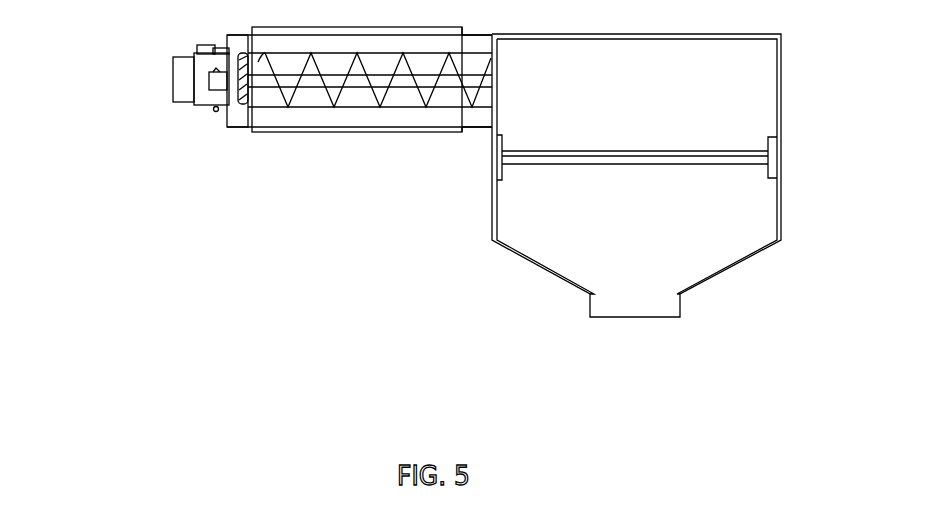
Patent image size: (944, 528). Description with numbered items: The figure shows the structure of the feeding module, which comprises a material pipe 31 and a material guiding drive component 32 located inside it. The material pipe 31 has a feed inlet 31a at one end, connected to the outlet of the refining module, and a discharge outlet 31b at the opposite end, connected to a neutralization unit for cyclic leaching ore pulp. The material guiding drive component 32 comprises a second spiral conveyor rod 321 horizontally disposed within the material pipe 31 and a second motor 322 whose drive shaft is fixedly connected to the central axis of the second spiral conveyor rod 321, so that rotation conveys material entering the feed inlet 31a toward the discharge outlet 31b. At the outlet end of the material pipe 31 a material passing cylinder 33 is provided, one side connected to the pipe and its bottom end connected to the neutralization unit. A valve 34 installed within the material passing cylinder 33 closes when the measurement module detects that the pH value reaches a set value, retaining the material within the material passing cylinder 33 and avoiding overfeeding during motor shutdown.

The material pipe 31 is at (397, 132).
The feed inlet 31a is at (243, 120).
The discharge outlet 31b is at (454, 131).
The material guiding drive component 32 is at (150, 79).
The second spiral conveyor rod 321 is at (343, 87).
The second motor 322 is at (210, 90).
The material passing cylinder 33 is at (780, 80).
The valve 34 is at (683, 157).